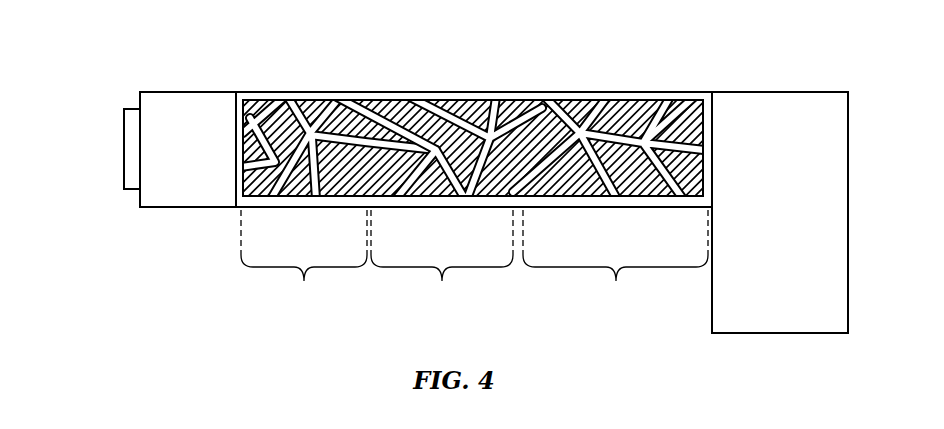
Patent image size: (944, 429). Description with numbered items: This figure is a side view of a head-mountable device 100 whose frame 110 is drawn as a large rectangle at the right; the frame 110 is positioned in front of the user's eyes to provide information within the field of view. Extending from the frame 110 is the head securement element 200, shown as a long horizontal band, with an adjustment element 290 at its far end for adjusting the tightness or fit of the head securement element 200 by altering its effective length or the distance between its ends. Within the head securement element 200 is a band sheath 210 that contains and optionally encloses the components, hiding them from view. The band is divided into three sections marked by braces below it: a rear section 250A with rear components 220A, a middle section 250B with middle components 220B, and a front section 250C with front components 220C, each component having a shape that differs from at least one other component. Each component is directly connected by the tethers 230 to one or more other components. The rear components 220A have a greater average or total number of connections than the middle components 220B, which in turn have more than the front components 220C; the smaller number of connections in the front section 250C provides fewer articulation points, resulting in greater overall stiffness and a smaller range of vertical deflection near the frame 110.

The head-mountable device 100 is at (116, 54).
The frame 110 is at (778, 92).
The head securement element 200 is at (186, 92).
The band sheath 210 is at (242, 92).
The rear components 220A is at (290, 100).
The middle components 220B is at (410, 100).
The front components 220C is at (607, 100).
The tether 230 is at (464, 207).
The rear section 250A is at (306, 260).
The middle section 250B is at (447, 260).
The front section 250C is at (615, 260).
The adjustment element 290 is at (124, 150).